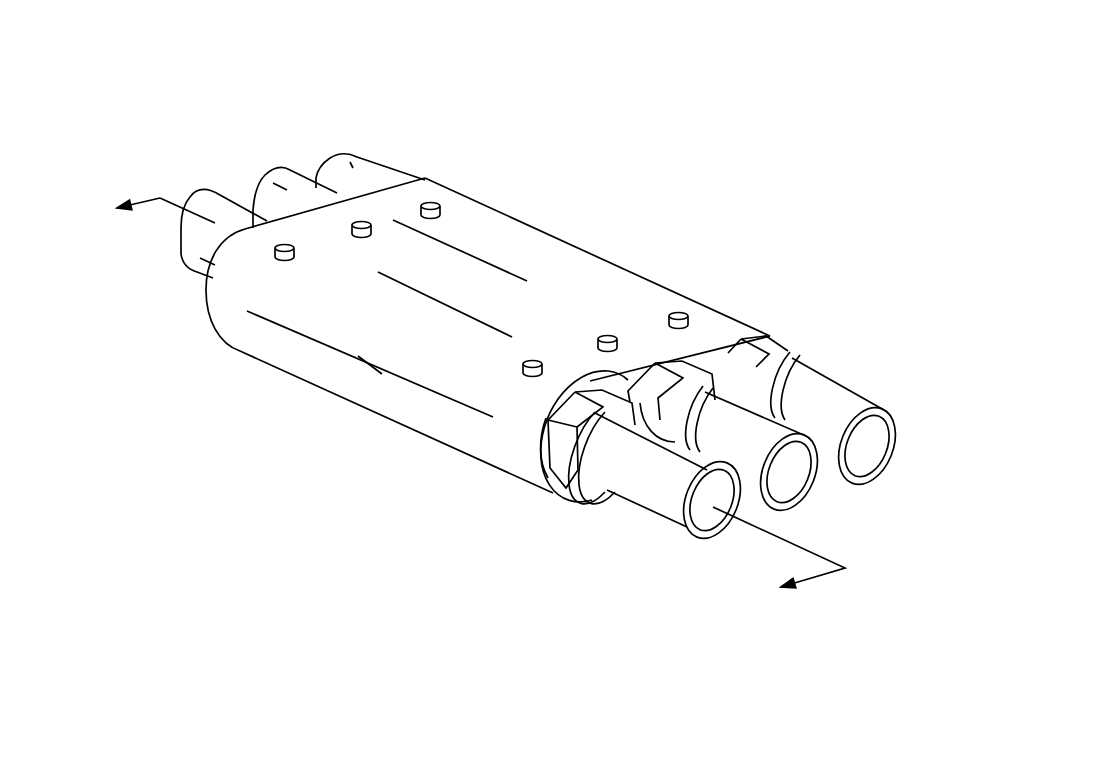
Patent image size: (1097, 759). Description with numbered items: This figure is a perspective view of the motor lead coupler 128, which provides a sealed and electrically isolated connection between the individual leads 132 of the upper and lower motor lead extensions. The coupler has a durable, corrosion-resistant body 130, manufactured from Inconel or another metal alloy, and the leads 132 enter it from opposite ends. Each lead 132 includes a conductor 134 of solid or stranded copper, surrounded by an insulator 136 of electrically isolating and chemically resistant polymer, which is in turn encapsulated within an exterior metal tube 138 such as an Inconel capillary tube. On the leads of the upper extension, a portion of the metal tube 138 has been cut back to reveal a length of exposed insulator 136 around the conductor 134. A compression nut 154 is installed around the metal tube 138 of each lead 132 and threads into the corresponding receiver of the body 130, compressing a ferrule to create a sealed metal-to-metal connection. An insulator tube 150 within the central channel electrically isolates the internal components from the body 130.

The motor lead coupler 128 is at (618, 120).
The body 130 is at (487, 252).
The leads 132 is at (160, 183).
The conductor 134 is at (871, 455).
The insulator 136 is at (805, 393).
The metal tube 138 is at (212, 223).
The insulator tube 150 is at (359, 220).
The compression nut 154 is at (647, 383).